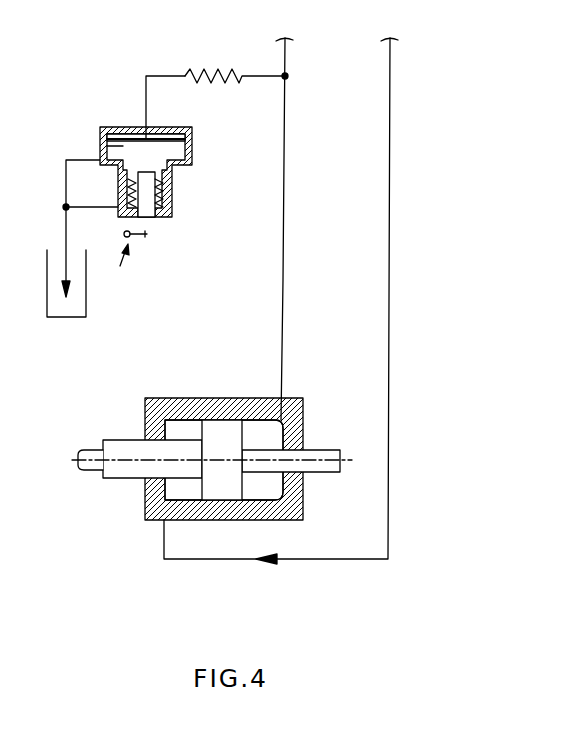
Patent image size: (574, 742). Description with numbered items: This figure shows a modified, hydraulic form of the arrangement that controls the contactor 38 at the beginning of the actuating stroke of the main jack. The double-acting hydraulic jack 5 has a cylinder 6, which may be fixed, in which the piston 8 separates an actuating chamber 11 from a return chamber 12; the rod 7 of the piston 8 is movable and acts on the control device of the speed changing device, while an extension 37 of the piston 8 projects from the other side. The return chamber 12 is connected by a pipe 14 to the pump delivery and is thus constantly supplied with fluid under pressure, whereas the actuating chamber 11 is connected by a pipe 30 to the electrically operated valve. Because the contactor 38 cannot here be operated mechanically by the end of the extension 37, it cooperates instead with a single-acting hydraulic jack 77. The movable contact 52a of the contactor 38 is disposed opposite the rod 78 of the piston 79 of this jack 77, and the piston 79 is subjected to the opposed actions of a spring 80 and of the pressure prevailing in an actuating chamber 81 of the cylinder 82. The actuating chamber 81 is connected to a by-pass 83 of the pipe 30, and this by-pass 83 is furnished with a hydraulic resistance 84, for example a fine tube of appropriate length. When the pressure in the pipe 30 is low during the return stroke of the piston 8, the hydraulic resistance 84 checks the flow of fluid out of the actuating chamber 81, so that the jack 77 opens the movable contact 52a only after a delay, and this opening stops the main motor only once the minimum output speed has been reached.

The double-acting hydraulic jack 5 is at (216, 390).
The cylinder 6 is at (178, 398).
The rod 7 is at (123, 445).
The piston 8 is at (226, 432).
The actuating chamber 11 is at (265, 492).
The return chamber 12 is at (183, 492).
The pipe 14 is at (388, 283).
The pipe 30 is at (283, 277).
The extension 37 is at (318, 455).
The contactor 38 is at (126, 269).
The movable contact 52a is at (140, 236).
The single-acting hydraulic jack 77 is at (192, 172).
The rod 78 is at (152, 212).
The piston 79 is at (110, 138).
The spring 80 is at (162, 194).
The actuating chamber 81 is at (126, 127).
The cylinder 82 is at (193, 146).
The by-pass 83 is at (161, 76).
The hydraulic resistance 84 is at (206, 72).